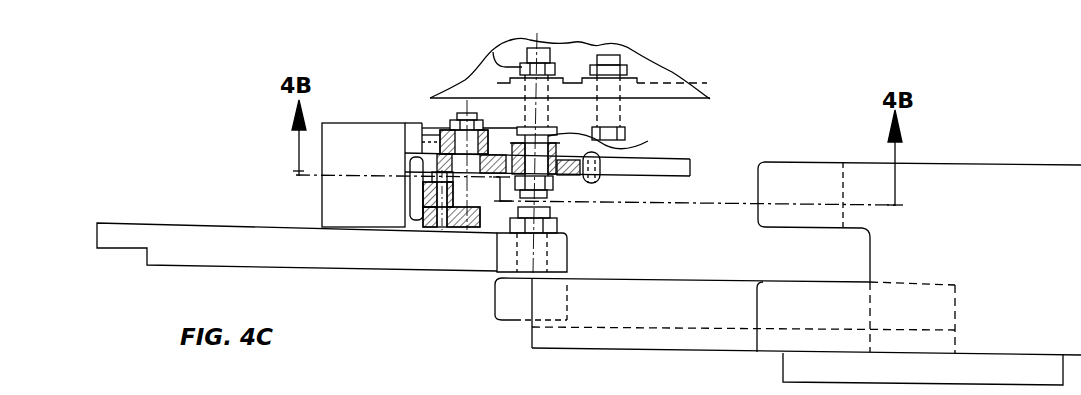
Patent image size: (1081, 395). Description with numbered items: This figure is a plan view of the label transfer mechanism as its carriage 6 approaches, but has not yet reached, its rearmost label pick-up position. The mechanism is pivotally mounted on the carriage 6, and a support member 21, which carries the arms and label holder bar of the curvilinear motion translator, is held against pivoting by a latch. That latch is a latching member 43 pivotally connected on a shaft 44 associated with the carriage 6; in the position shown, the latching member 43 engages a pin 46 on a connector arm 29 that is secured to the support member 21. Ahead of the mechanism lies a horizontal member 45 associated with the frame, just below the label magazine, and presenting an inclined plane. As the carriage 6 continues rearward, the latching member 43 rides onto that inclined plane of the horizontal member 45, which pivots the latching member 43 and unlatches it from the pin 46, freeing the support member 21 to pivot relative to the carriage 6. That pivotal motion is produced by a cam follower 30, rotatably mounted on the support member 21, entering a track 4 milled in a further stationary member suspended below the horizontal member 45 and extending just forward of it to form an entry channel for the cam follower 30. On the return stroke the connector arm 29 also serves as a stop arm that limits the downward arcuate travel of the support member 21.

The track 4 is at (587, 317).
The carriage 6 is at (704, 97).
The support member 21 is at (235, 232).
The connector arm 29 is at (413, 133).
The cam follower 30 is at (502, 312).
The latching member 43 is at (683, 174).
The shaft 44 is at (615, 142).
The horizontal member 45 is at (810, 170).
The pin 46 is at (475, 167).